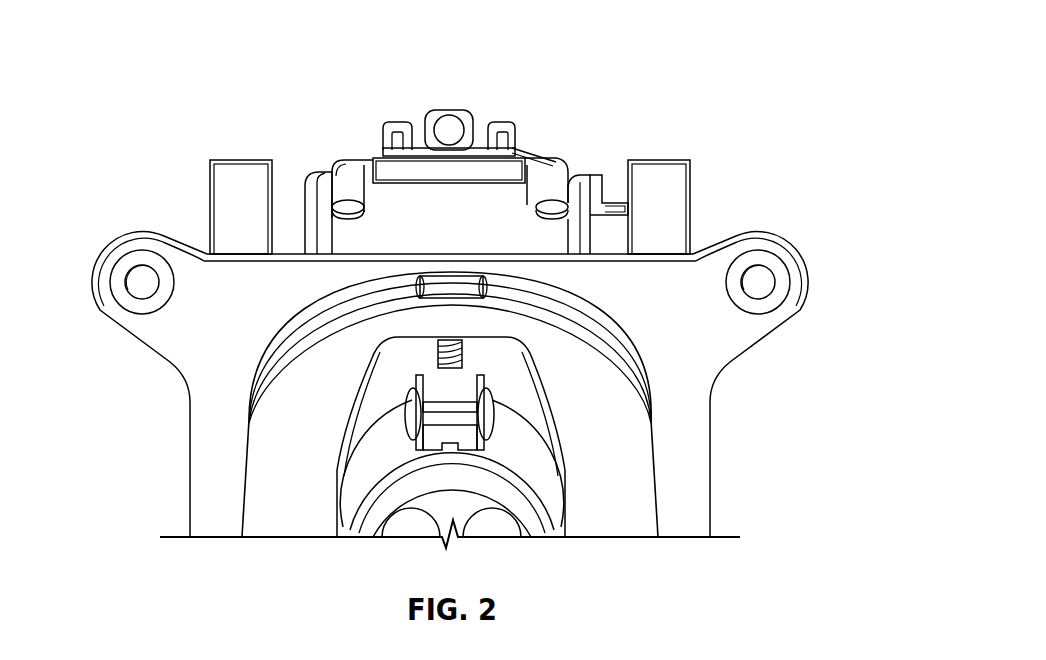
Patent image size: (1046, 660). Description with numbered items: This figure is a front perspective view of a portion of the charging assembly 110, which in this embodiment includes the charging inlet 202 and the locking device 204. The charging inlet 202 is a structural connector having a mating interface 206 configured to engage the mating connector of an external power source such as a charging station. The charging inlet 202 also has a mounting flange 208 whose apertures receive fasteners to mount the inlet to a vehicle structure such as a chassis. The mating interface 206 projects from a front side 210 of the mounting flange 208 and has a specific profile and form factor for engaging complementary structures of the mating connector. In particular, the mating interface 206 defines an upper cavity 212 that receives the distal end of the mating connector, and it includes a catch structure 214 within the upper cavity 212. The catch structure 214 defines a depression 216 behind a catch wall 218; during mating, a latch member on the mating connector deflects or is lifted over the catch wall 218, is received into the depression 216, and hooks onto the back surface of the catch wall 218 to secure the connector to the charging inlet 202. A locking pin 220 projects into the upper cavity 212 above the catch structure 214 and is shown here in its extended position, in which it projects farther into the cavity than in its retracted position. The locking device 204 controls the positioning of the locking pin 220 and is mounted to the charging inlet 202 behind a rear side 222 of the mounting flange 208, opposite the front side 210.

The charging assembly 110 is at (190, 91).
The charging inlet 202 is at (628, 460).
The locking device 204 is at (352, 165).
The mating interface 206 is at (268, 476).
The mounting flange 208 is at (165, 235).
The front side 210 is at (215, 365).
The upper cavity 212 is at (537, 379).
The catch structure 214 is at (415, 443).
The depression 216 is at (447, 383).
The catch wall 218 is at (466, 400).
The locking pin 220 is at (437, 353).
The rear side 222 is at (734, 237).